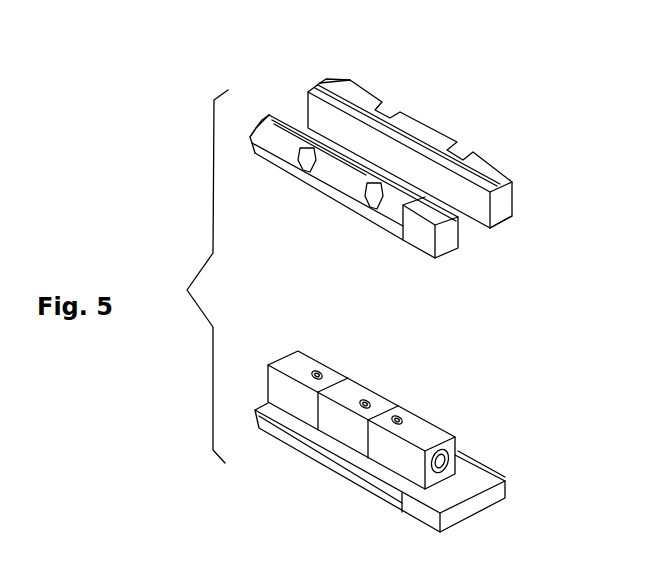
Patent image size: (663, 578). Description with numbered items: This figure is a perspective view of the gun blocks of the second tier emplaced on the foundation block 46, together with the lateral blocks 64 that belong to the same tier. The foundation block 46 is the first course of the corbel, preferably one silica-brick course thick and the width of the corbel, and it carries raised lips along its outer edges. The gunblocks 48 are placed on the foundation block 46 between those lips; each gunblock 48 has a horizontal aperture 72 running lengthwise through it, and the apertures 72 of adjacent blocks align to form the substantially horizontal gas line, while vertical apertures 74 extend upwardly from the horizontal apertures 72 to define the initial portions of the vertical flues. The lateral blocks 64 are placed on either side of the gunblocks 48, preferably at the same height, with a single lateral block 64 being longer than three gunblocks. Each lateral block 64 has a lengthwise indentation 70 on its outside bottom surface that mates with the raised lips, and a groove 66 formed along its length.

The foundation block 46 is at (460, 490).
The gunblock 48 is at (332, 373).
The lateral block 64 is at (425, 136).
The groove 66 is at (318, 82).
The lengthwise indentation 70 is at (508, 222).
The horizontal aperture 72 is at (455, 443).
The vertical aperture 74 is at (318, 371).